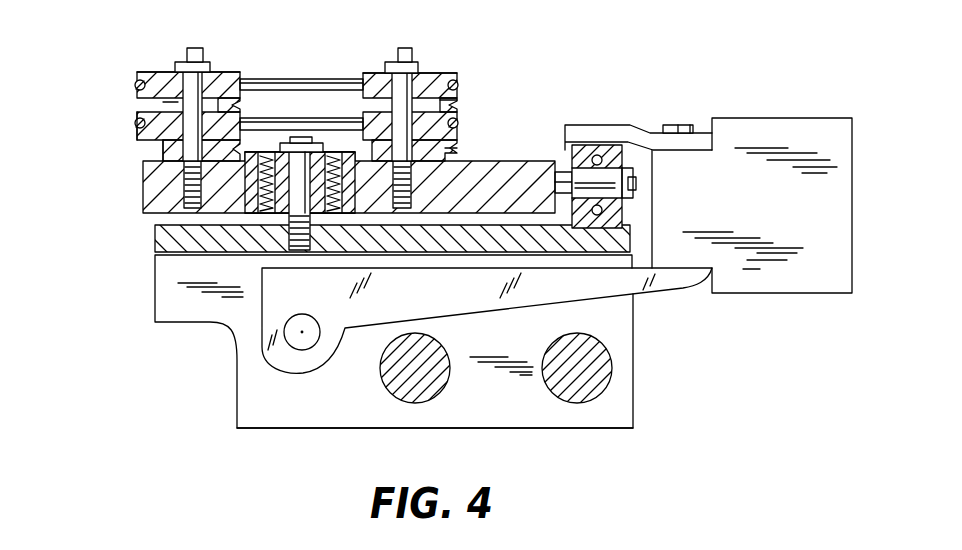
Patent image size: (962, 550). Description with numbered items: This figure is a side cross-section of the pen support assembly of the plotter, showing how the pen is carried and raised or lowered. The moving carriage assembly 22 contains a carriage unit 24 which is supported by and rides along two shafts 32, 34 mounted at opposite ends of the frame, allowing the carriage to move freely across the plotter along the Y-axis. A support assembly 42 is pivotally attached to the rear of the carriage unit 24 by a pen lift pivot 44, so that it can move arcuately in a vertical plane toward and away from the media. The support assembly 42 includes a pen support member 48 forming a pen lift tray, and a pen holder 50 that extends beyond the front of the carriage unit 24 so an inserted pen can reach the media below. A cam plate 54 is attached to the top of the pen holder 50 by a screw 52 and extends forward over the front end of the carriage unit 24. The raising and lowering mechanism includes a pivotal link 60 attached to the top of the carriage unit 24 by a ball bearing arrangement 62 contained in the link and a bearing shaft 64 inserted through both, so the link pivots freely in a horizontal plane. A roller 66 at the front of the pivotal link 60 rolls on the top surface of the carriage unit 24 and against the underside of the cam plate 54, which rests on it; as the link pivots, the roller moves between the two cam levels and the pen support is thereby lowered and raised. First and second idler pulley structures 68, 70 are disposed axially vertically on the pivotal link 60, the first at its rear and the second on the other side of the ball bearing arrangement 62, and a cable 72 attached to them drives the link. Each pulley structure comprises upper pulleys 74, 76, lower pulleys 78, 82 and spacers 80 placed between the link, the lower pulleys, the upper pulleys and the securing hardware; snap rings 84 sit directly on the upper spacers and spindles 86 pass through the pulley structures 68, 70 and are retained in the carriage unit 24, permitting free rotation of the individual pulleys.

The moving carriage assembly 22 is at (226, 384).
The carriage unit 24 is at (622, 405).
The shaft 32 is at (565, 397).
The shaft 34 is at (395, 398).
The support assembly 42 is at (802, 76).
The pen lift pivot 44 is at (310, 345).
The pen support member 48 is at (685, 288).
The pen holder 50 is at (830, 133).
The screw 52 is at (693, 120).
The cam plate 54 is at (630, 130).
The pivotal link 60 is at (553, 160).
The ball bearing arrangement 62 is at (262, 160).
The bearing shaft 64 is at (302, 160).
The roller 66 is at (603, 153).
The first idler pulley structure 68 is at (132, 65).
The second idler pulley structure 70 is at (500, 90).
The cable 72 is at (274, 83).
The upper pulley 74 is at (163, 102).
The upper pulley 76 is at (450, 100).
The lower pulley 78 is at (138, 131).
The spacer 80 is at (217, 68).
The lower pulley 82 is at (481, 232).
The snap ring 84 is at (178, 62).
The spindle 86 is at (194, 52).